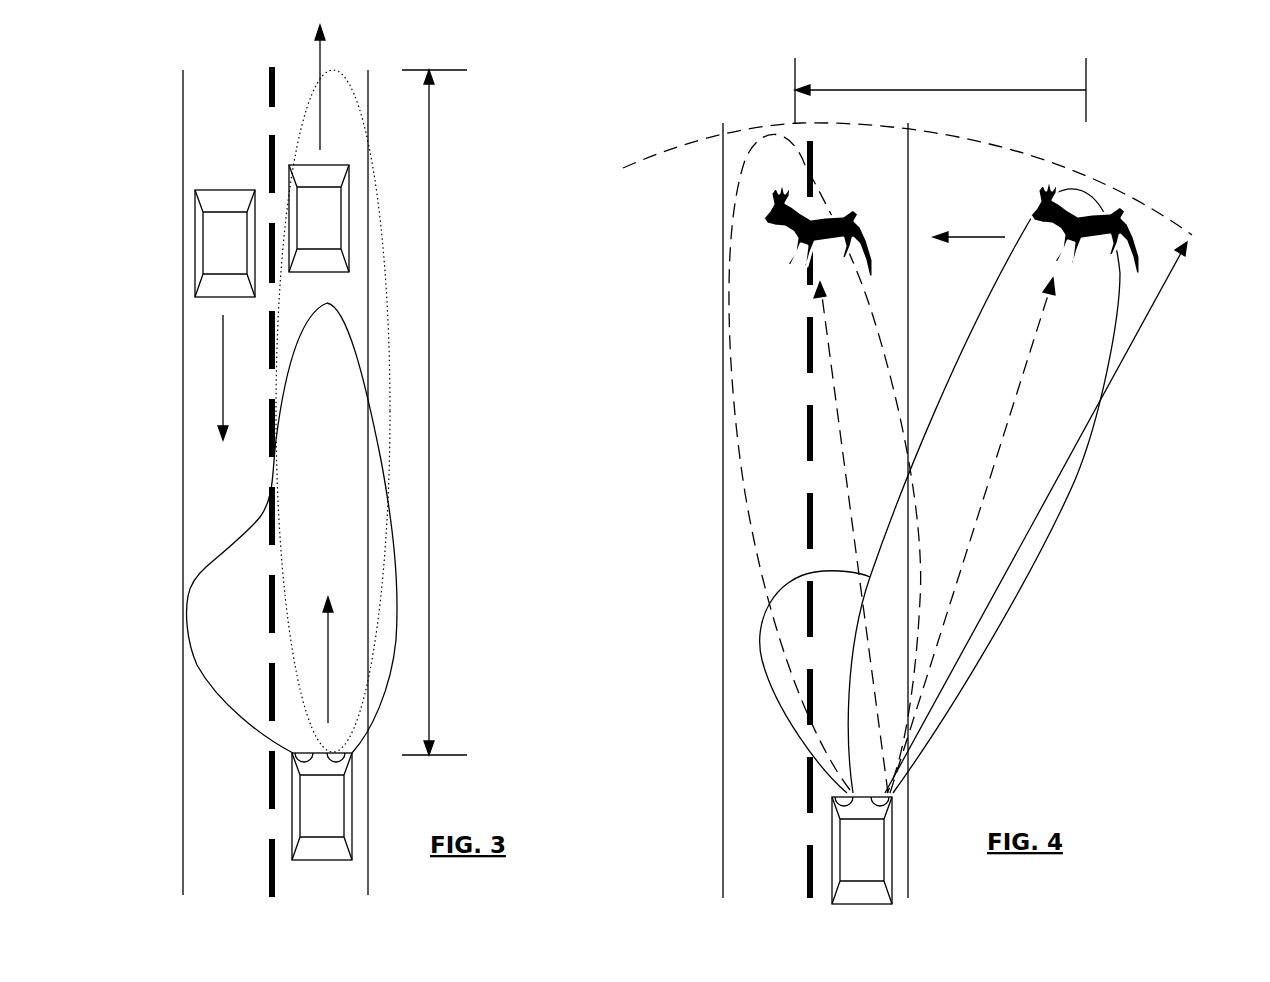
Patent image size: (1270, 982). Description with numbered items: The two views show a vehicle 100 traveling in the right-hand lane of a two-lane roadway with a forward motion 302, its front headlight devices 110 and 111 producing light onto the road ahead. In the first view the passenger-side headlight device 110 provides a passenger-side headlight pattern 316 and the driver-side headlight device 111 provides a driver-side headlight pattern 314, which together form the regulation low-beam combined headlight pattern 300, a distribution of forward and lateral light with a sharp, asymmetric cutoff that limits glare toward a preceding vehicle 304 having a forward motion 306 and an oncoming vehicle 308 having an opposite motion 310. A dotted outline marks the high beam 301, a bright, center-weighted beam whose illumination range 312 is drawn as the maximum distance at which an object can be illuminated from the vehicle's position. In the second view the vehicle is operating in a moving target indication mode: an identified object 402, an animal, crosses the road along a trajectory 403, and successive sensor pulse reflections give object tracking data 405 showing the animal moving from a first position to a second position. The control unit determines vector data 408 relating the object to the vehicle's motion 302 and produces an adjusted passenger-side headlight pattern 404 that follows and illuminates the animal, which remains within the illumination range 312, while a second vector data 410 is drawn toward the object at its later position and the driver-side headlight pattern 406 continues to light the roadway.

In FIG. 3, the vehicle 100 is at (322, 806).
In FIG. 4, the vehicle 100 is at (862, 850).
In FIG. 3, the headlight device 110 is at (349, 755).
In FIG. 4, the headlight device 110 is at (890, 804).
In FIG. 3, the headlight device 111 is at (295, 755).
In FIG. 4, the headlight device 111 is at (840, 805).
In FIG. 3, the combined headlight pattern 300 is at (302, 528).
In FIG. 3, the high beam 301 is at (349, 68).
In FIG. 3, the forward motion 302 is at (341, 660).
In FIG. 3, the vehicle 304 is at (319, 218).
In FIG. 3, the forward motion 306 is at (309, 87).
In FIG. 3, the vehicle 308 is at (225, 243).
In FIG. 3, the opposite motion 310 is at (210, 377).
In FIG. 3, the illumination range 312 is at (434, 412).
In FIG. 4, the illumination range 312 is at (1163, 400).
In FIG. 3, the driver-side headlight pattern 314 is at (197, 650).
In FIG. 3, the passenger-side headlight pattern 316 is at (452, 528).
In FIG. 4, the object 402 is at (740, 232).
In FIG. 4, the trajectory 403 is at (969, 227).
In FIG. 4, the adjusted passenger-side headlight pattern 404 is at (985, 656).
In FIG. 4, the object tracking data 405 is at (935, 75).
In FIG. 4, the driver-side headlight pattern 406 is at (737, 433).
In FIG. 4, the vector data 408 is at (986, 535).
In FIG. 4, the vector data to object 2 410 is at (851, 537).